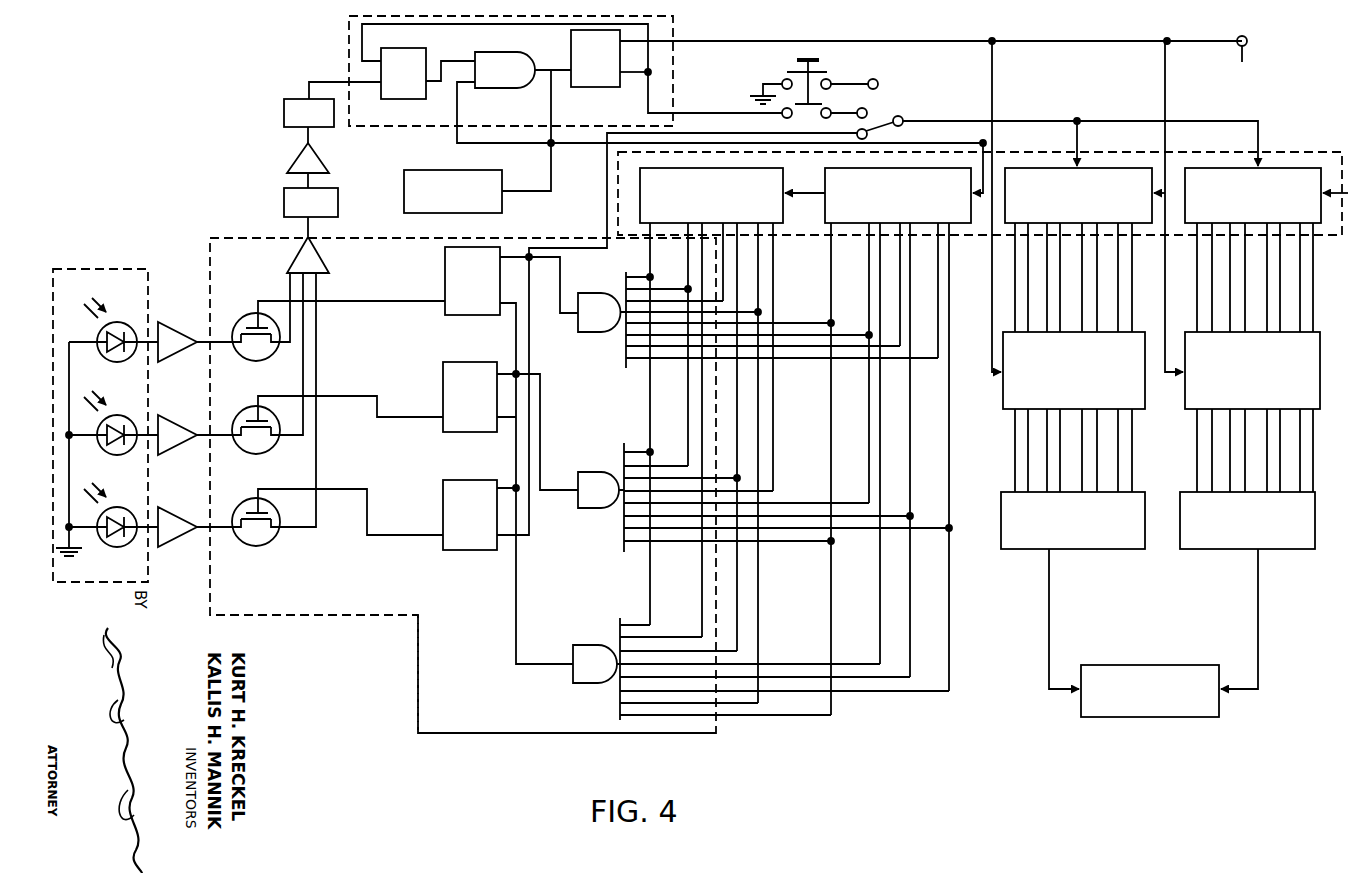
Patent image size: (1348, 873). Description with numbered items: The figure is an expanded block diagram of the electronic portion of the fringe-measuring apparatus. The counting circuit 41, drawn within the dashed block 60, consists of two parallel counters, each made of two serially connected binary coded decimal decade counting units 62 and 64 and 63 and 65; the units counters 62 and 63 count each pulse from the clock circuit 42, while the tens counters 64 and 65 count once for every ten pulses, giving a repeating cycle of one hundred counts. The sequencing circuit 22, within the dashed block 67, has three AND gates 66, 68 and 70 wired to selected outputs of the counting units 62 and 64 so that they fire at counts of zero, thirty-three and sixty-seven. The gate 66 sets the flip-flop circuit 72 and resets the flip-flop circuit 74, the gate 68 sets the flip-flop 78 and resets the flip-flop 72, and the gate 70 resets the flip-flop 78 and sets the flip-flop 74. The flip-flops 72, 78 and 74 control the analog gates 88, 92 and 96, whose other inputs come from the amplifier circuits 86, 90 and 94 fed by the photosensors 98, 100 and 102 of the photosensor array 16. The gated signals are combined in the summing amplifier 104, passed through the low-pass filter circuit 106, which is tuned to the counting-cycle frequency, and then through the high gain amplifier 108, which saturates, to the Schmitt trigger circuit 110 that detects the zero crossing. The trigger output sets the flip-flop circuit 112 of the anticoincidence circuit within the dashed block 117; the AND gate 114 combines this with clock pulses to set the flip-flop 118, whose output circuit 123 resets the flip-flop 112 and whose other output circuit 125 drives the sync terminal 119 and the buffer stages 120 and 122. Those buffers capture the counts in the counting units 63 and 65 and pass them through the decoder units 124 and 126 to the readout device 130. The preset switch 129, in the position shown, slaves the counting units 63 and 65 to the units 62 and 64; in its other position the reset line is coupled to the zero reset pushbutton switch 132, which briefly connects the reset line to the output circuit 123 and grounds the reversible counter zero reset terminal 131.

The photosensors 16 is at (118, 574).
The sequencing circuit 22 is at (396, 279).
The counting circuit 41 is at (811, 169).
The clock circuit 42 is at (404, 198).
The dashed block 60 is at (617, 167).
The units counting unit 62 is at (825, 223).
The units counting unit 63 is at (1185, 223).
The tens counting unit 64 is at (640, 203).
The tens counting unit 65 is at (1005, 223).
The AND gate circuit 66 is at (612, 294).
The dashed block 67 is at (418, 656).
The AND gate circuit 68 is at (598, 473).
The AND gate circuit 70 is at (593, 645).
The flip-flop circuit 72 is at (455, 316).
The flip-flop circuit 74 is at (456, 550).
The flip-flop circuit 78 is at (443, 372).
The amplifier circuit 86 is at (169, 322).
The analog gate 88 is at (258, 353).
The amplifier circuit 90 is at (175, 416).
The analog gate 92 is at (258, 446).
The amplifier circuit 94 is at (174, 508).
The analog gate 96 is at (253, 541).
The photosensor 98 is at (114, 323).
The photosensor 100 is at (115, 416).
The photosensor 102 is at (120, 510).
The summing amplifier circuit 104 is at (289, 262).
The low-pass filter circuit 106 is at (284, 205).
The high gain amplifier 108 is at (290, 165).
The Schmitt trigger circuit 110 is at (284, 116).
The flip-flop circuit 112 is at (381, 90).
The AND gate 114 is at (518, 52).
The dashed block 117 is at (673, 78).
The flip-flop 118 is at (612, 88).
The sync terminal 119 is at (1245, 61).
The buffer stage 120 is at (1182, 385).
The buffer stage 122 is at (1003, 385).
The output circuit 123 is at (636, 73).
The decoder unit 124 is at (1214, 552).
The output circuit 125 is at (640, 41).
The decoder unit 126 is at (1025, 552).
The preset switch 129 is at (900, 117).
The readout device 130 is at (1205, 720).
The reversible counter zero reset terminal 131 is at (878, 82).
The zero reset pushbutton switch 132 is at (813, 68).